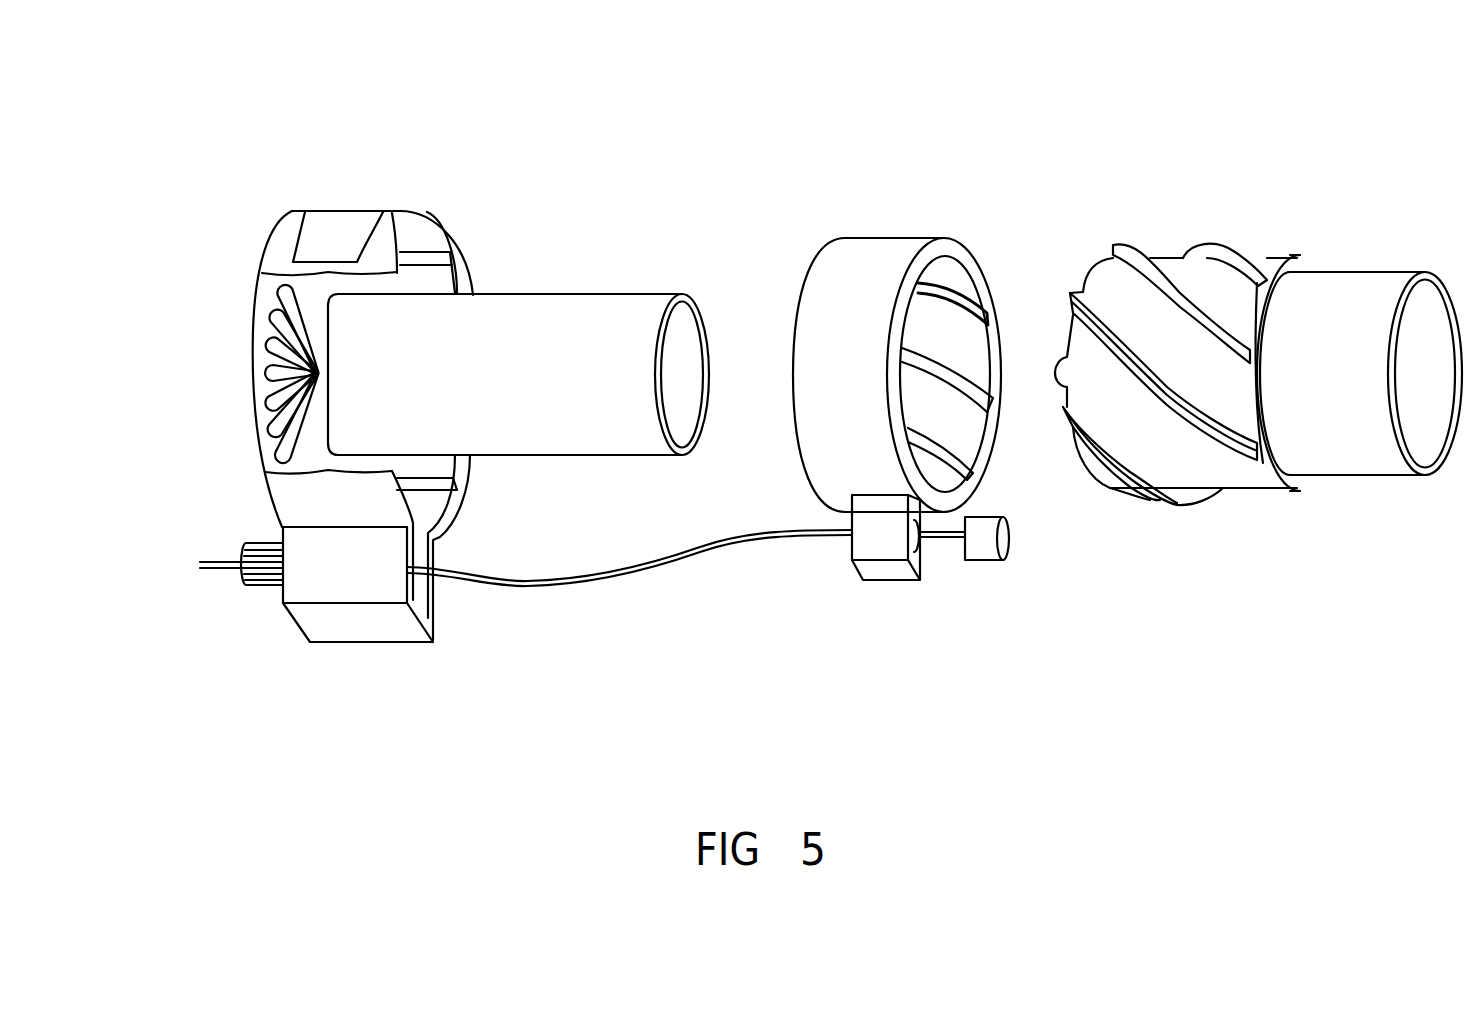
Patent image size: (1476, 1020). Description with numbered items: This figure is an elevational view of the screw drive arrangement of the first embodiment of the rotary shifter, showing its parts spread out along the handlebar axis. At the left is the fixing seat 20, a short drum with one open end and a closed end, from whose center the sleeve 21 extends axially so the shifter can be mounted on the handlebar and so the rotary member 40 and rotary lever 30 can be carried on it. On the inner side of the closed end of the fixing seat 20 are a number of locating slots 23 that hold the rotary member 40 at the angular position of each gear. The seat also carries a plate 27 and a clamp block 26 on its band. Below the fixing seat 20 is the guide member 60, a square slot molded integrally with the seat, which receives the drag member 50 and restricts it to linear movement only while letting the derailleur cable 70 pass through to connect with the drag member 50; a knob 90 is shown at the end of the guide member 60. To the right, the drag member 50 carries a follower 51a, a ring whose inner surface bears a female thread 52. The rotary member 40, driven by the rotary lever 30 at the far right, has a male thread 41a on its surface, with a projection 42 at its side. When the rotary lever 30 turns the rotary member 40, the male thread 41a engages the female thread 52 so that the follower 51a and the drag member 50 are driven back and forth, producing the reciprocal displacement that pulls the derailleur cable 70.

The fixing seat 20 is at (430, 211).
The sleeve 21 is at (552, 294).
The locating slots 23 is at (273, 375).
The clamp block 26 is at (460, 273).
The label plate 27 is at (333, 232).
The rotary lever 30 is at (1345, 272).
The rotary member 40 is at (1082, 287).
The male thread 41a is at (1205, 248).
The projection 42 is at (1056, 377).
The drag member 50 is at (883, 570).
The follower 51a is at (866, 257).
The female thread 52 is at (973, 302).
The guide member 60 is at (368, 615).
The derailleur cable 70 is at (613, 585).
The adjustment knob 90 is at (262, 572).